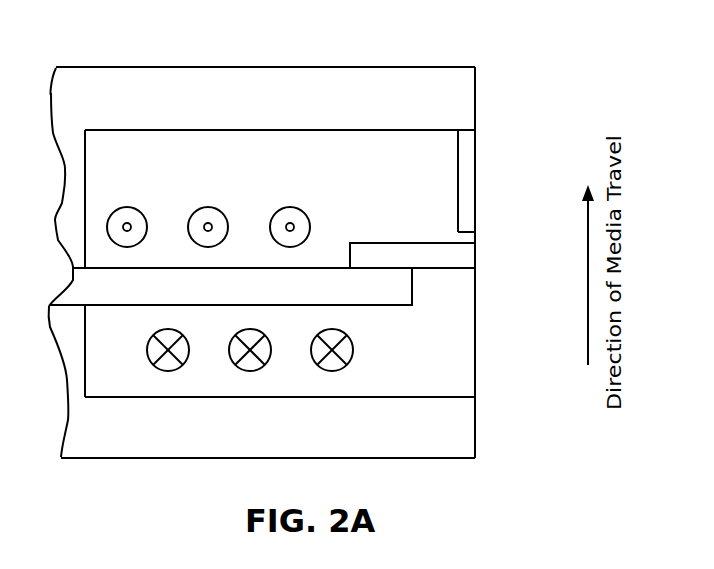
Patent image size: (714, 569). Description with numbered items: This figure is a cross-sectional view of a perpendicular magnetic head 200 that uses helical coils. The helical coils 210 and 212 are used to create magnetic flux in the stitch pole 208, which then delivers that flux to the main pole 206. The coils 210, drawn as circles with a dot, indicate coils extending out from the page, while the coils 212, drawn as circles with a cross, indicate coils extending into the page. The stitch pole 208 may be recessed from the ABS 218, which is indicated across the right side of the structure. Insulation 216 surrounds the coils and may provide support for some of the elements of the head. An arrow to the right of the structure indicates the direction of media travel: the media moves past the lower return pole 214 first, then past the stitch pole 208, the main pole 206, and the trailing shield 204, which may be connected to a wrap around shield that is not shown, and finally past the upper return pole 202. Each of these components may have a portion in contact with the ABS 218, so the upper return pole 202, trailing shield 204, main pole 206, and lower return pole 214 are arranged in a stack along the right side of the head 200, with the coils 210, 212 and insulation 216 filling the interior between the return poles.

The perpendicular magnetic head 200 is at (205, 36).
The upper return pole 202 is at (367, 110).
The trailing shield 204 is at (477, 190).
The main pole 206 is at (477, 251).
The stitch pole 208 is at (303, 299).
The helical coils 210 is at (122, 204).
The helical coils 212 is at (147, 352).
The lower return pole 214 is at (301, 438).
The insulation 216 is at (413, 196).
The ABS 218 is at (488, 89).